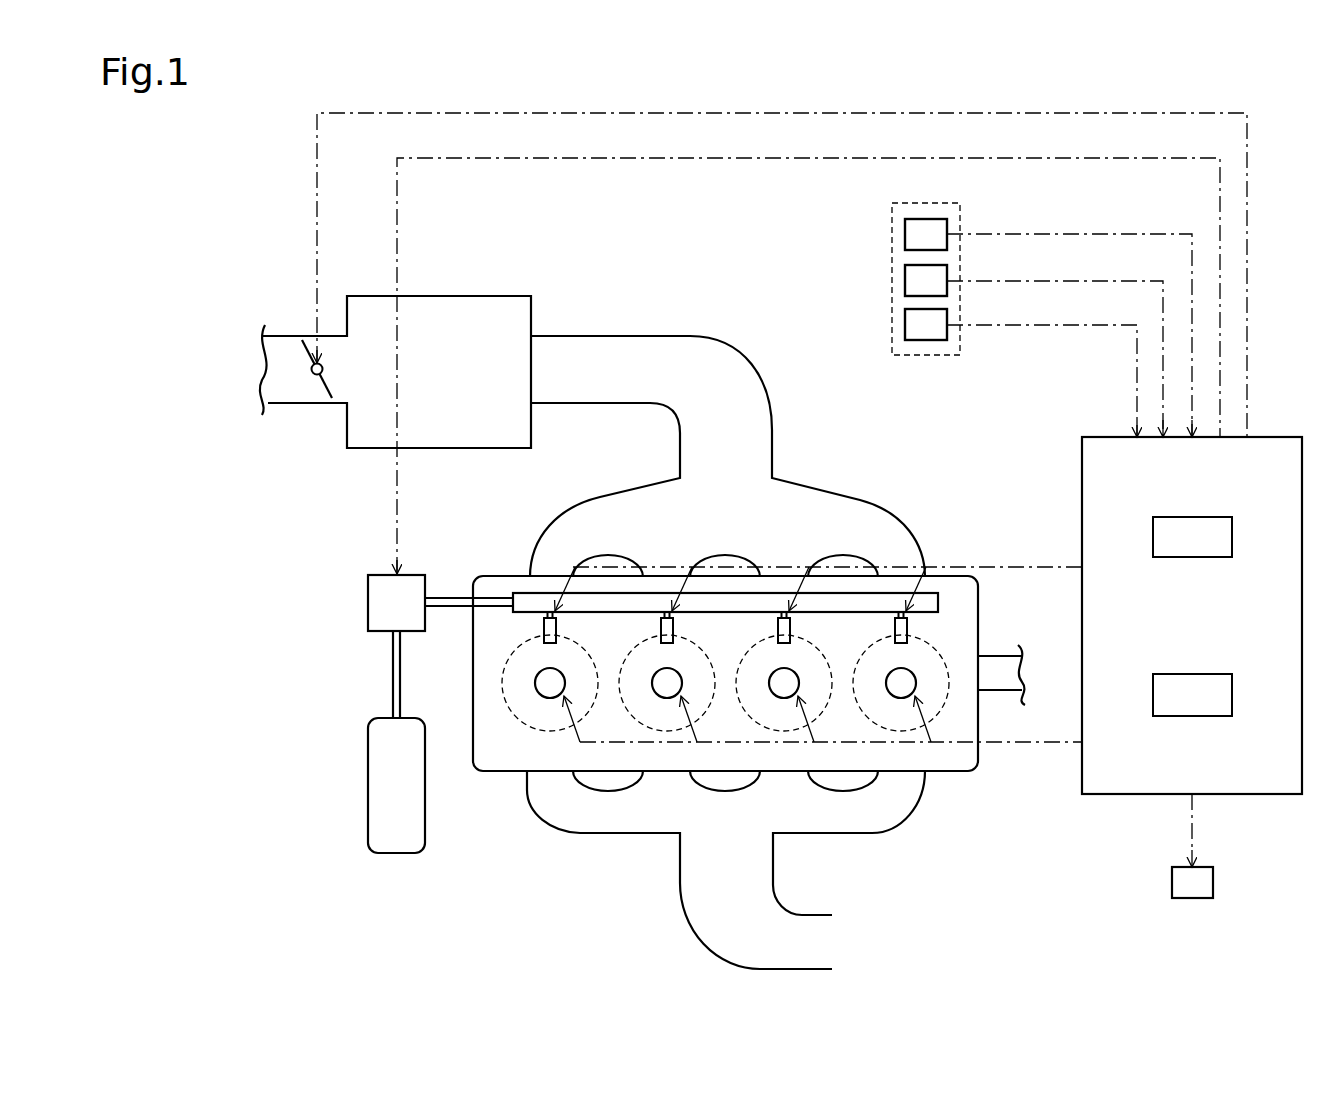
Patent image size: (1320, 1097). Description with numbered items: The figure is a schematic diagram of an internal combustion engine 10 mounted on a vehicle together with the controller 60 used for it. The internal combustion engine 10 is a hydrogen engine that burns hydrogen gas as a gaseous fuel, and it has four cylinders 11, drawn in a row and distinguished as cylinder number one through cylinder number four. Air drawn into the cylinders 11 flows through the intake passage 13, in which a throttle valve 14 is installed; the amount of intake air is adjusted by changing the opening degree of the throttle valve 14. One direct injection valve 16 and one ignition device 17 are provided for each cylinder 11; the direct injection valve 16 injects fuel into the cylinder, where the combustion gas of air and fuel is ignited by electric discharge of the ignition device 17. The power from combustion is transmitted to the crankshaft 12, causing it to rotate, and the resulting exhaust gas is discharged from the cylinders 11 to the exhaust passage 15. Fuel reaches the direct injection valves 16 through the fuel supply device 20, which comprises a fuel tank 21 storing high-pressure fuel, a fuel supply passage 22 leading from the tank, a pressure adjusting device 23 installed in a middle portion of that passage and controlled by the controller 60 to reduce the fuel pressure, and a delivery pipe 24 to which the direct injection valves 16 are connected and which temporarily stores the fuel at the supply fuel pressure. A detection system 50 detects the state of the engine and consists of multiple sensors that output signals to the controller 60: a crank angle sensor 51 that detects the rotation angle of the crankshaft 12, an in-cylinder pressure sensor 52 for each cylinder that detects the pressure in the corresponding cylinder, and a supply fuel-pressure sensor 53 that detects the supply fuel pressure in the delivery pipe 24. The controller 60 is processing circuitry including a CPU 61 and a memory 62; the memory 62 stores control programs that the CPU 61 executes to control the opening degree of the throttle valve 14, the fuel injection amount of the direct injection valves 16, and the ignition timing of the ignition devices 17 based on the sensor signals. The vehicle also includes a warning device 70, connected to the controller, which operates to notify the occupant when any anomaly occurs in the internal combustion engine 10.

The internal combustion engine 10 is at (932, 899).
The cylinders 11 is at (575, 650).
The crankshaft 12 is at (999, 655).
The intake passage 13 is at (290, 403).
The throttle valve 14 is at (305, 352).
The exhaust passage 15 is at (902, 801).
The direct injection valve 16 is at (545, 624).
The ignition device 17 is at (535, 685).
The fuel supply device 20 is at (370, 714).
The fuel tank 21 is at (368, 787).
The fuel supply passage 22 is at (393, 675).
The pressure adjusting device 23 is at (368, 603).
The delivery pipe 24 is at (933, 593).
The detection system 50 is at (1002, 309).
The crank angle sensor 51 is at (905, 325).
The in-cylinder pressure sensor 52 is at (905, 281).
The supply fuel-pressure sensor 53 is at (905, 234).
The controller 60 is at (1192, 586).
The CPU 61 is at (1232, 537).
The memory 62 is at (1232, 695).
The warning device 70 is at (1192, 898).